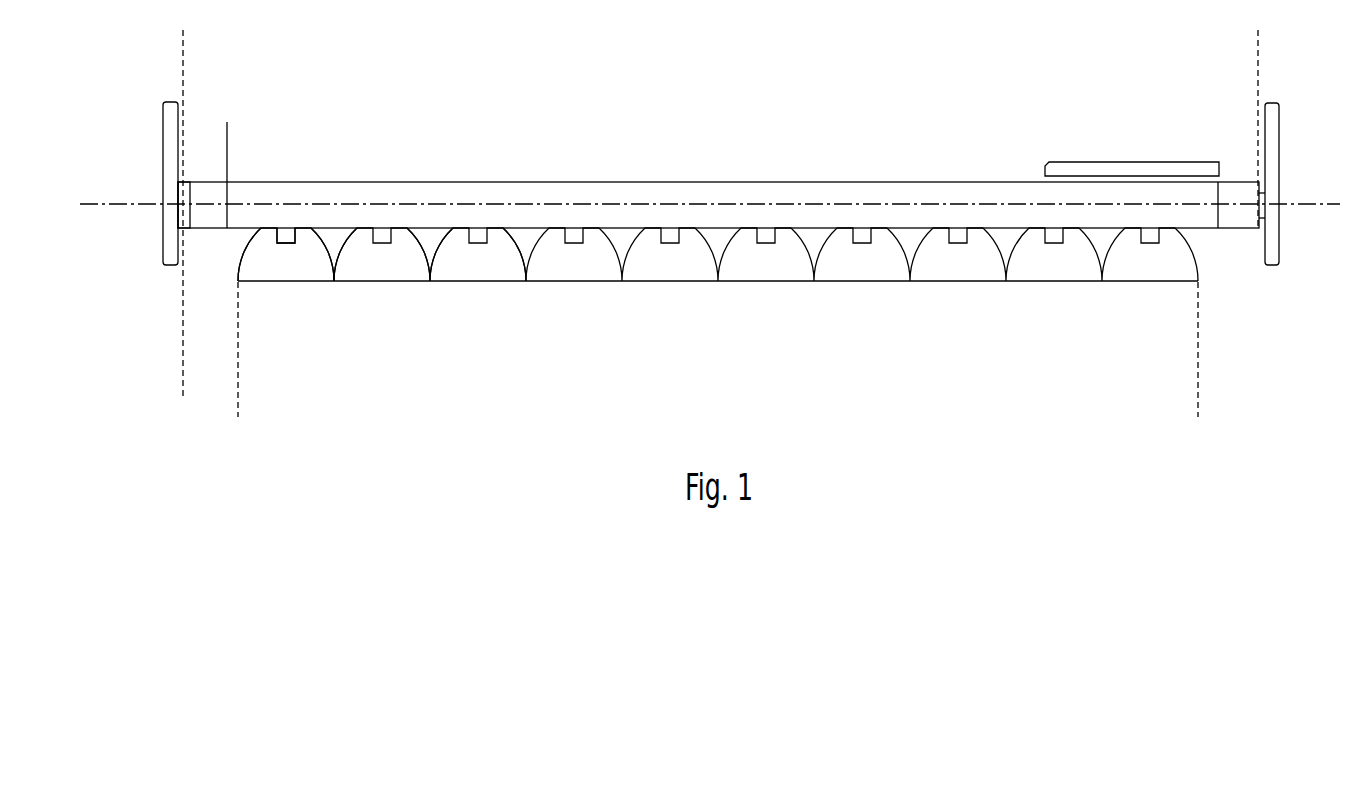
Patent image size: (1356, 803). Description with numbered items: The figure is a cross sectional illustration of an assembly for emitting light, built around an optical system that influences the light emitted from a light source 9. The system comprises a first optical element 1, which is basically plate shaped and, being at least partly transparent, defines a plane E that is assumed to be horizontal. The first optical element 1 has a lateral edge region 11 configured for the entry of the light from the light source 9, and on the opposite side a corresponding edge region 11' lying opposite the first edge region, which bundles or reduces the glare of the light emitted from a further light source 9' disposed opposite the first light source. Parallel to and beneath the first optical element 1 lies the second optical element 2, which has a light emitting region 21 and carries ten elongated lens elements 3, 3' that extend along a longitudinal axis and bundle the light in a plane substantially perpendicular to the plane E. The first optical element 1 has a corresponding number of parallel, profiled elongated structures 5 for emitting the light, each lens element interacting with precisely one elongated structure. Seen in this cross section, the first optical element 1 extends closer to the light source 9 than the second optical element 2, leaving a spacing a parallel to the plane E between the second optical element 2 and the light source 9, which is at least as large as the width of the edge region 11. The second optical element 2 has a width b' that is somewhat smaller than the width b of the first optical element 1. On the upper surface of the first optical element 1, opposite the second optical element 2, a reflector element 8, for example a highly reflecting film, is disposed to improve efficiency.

The first optical element 1 is at (880, 190).
The second optical element 2 is at (773, 273).
The lens element 3 is at (286, 281).
The lens element 3' is at (430, 281).
The elongated structure 5 is at (288, 233).
The reflector element 8 is at (1104, 165).
The light source 9 is at (142, 174).
The further light source 9' is at (1302, 182).
The lateral edge region 11 is at (212, 229).
The edge region 11' is at (1235, 228).
The light emitting region 21 is at (670, 283).
The plane E is at (133, 204).
The spacing a is at (238, 390).
The width of the first optical element b is at (720, 213).
The width of the second optical element b' is at (718, 353).